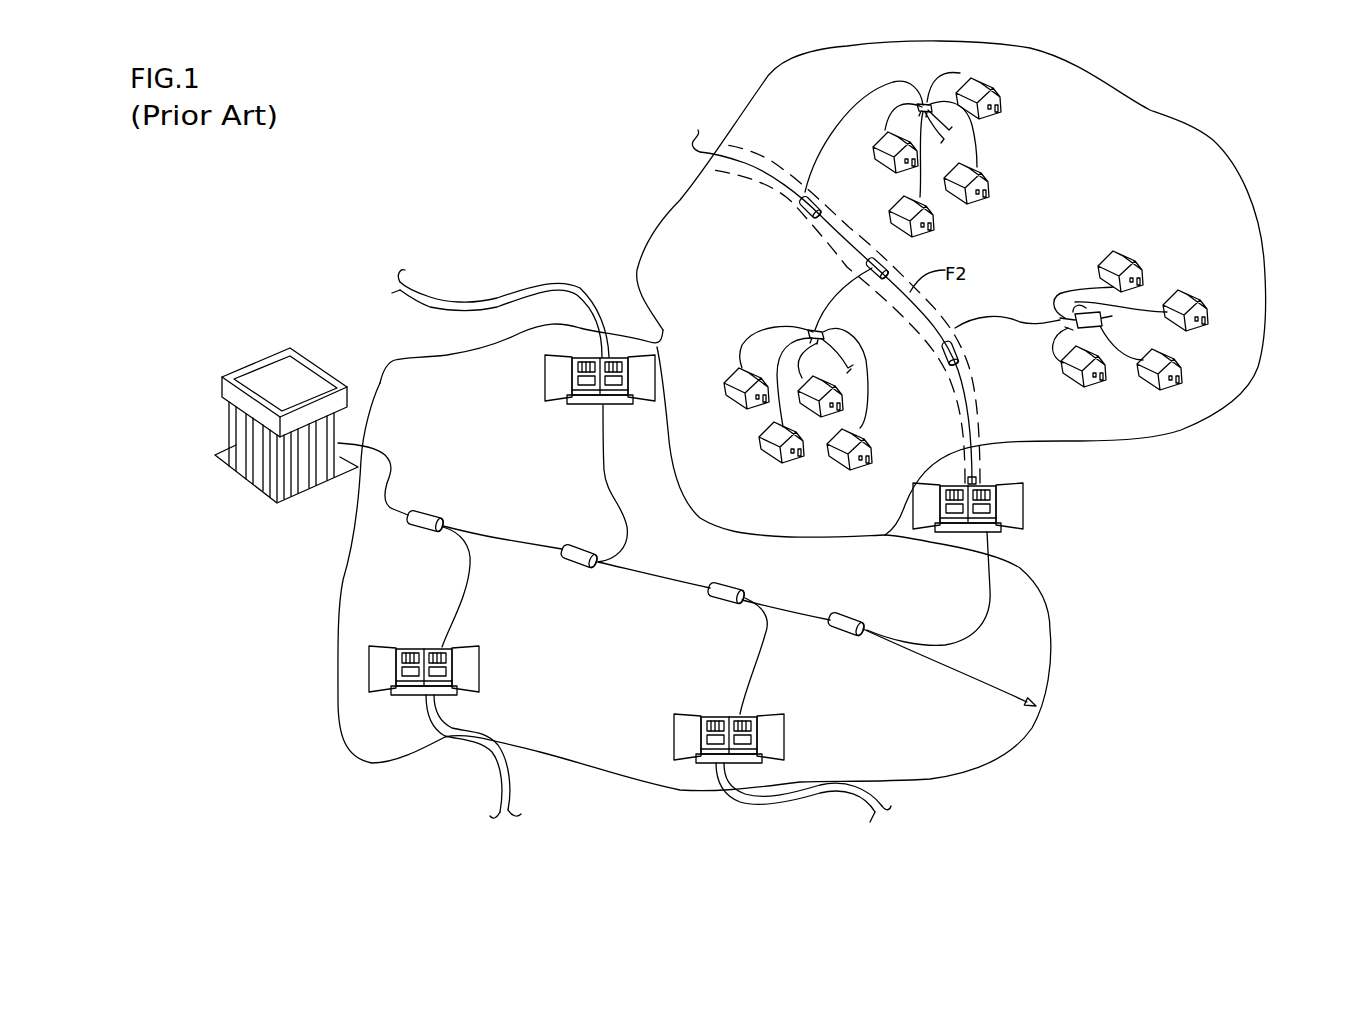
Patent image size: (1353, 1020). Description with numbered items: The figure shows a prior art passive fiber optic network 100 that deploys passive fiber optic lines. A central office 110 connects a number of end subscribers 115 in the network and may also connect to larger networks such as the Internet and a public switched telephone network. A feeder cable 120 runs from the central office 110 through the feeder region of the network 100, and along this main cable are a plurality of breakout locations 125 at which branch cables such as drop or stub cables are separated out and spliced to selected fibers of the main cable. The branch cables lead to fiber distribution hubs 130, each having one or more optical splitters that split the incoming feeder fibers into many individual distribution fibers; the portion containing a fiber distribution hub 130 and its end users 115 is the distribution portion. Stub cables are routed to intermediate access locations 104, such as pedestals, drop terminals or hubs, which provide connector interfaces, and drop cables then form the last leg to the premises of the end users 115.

The network 100 is at (432, 193).
The intermediate access location 104 is at (925, 100).
The central office 110 is at (226, 423).
The end subscribers 115 is at (977, 177).
The feeder cable F1 120 is at (392, 464).
The breakout location 125 is at (425, 510).
The fiber distribution hub 130 is at (645, 400).